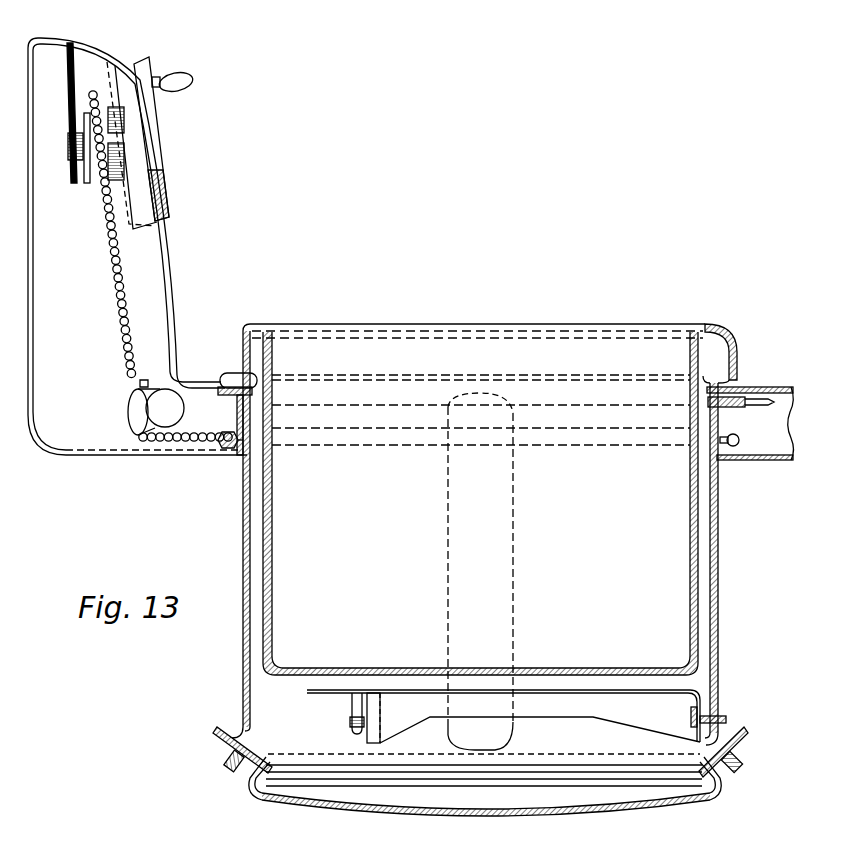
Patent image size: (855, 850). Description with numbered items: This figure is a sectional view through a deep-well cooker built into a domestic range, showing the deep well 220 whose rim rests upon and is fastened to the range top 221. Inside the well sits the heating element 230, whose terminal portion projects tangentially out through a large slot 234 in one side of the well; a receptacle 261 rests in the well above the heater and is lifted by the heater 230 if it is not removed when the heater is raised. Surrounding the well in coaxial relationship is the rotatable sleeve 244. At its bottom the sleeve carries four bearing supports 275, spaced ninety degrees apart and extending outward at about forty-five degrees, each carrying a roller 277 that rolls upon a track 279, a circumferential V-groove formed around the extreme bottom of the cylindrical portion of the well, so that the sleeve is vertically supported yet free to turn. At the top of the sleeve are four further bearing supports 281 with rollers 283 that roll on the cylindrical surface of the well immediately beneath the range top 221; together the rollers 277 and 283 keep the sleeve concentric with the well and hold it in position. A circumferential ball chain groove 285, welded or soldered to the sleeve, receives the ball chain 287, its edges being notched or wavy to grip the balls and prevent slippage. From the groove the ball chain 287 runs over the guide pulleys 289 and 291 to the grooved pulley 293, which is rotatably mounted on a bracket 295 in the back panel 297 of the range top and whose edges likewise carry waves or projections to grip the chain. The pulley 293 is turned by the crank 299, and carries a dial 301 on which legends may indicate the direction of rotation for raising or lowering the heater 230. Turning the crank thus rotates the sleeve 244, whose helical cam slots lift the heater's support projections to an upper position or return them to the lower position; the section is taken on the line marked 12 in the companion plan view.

The section line / viewing direction of FIG. 12 is at (795, 599).
The deep well 220 is at (642, 800).
The range top 221 is at (226, 372).
The heating element 230 is at (298, 677).
The large slot 234 is at (512, 729).
The sleeve 244 is at (245, 657).
The receptacle 261 is at (389, 323).
The bearing support 275 is at (230, 764).
The roller 277 is at (213, 733).
The track 279 is at (254, 781).
The bearing support 281 is at (740, 407).
The roller 283 is at (778, 397).
The ball chain groove 285 is at (237, 448).
The ball chain 287 is at (188, 443).
The guide pulley 289 is at (133, 423).
The guide pulley 291 is at (175, 387).
The grooved pulley 293 is at (98, 188).
The bracket 295 is at (88, 177).
The back panel 297 is at (82, 42).
The crank 299 is at (186, 74).
The dial 301 is at (167, 183).